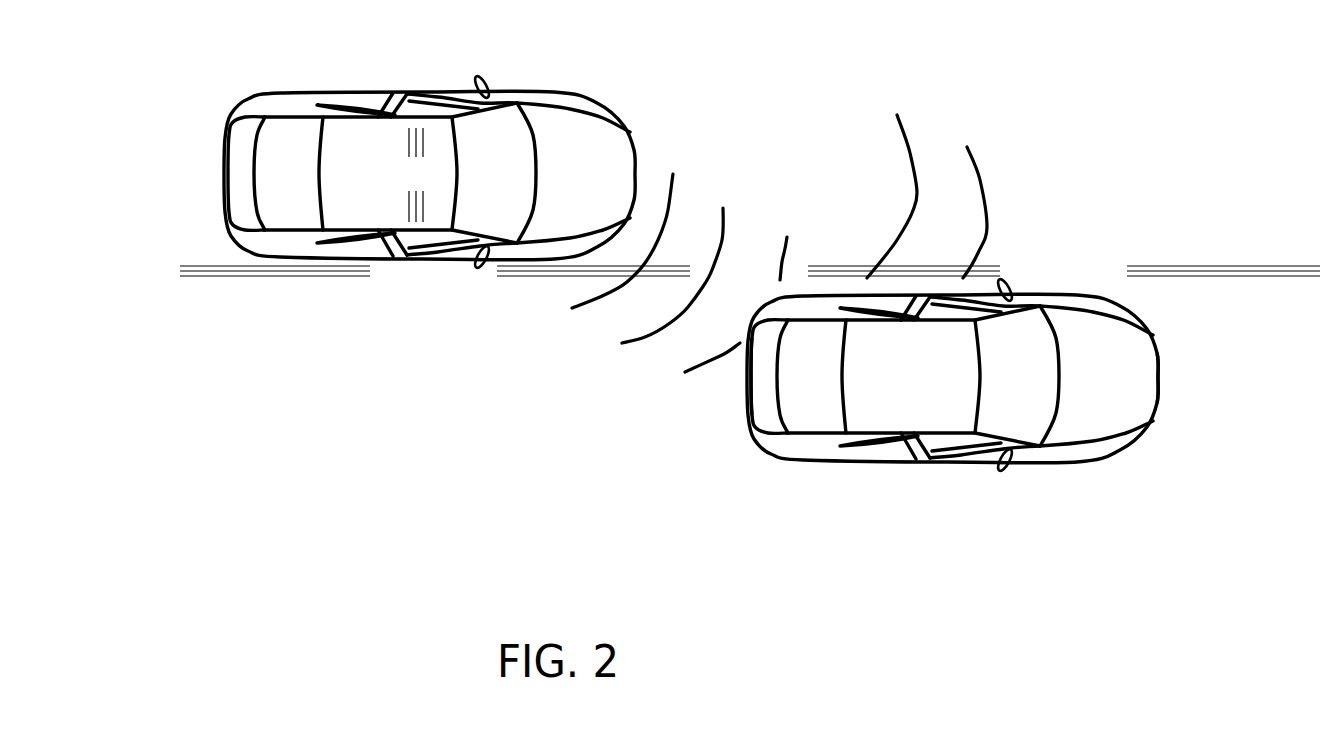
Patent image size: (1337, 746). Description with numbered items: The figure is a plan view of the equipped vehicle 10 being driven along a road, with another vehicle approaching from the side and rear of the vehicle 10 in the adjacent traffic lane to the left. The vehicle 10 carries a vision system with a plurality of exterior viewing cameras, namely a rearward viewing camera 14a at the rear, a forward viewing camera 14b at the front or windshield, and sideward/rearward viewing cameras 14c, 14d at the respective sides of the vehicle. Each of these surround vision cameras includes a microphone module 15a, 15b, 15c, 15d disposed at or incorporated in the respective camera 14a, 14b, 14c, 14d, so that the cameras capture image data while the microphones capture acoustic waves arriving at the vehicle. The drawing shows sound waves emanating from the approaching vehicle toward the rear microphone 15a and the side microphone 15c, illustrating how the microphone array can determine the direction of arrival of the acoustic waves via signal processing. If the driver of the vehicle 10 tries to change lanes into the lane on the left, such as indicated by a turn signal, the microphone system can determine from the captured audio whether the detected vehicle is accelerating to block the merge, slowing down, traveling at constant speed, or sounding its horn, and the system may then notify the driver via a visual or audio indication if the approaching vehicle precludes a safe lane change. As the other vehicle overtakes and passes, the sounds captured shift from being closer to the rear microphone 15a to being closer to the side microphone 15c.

The vehicle 10 is at (1017, 143).
The rearward viewing imaging sensor or camera 14a is at (679, 326).
The microphone module 15a is at (736, 384).
The forward viewing camera 14b is at (1241, 378).
The microphone module 15b is at (1170, 377).
The sideward/rearward viewing camera 14c is at (1007, 209).
The microphone module 15c is at (1010, 277).
The sideward/rearward viewing camera 14d is at (1050, 505).
The microphone module 15d is at (1016, 492).